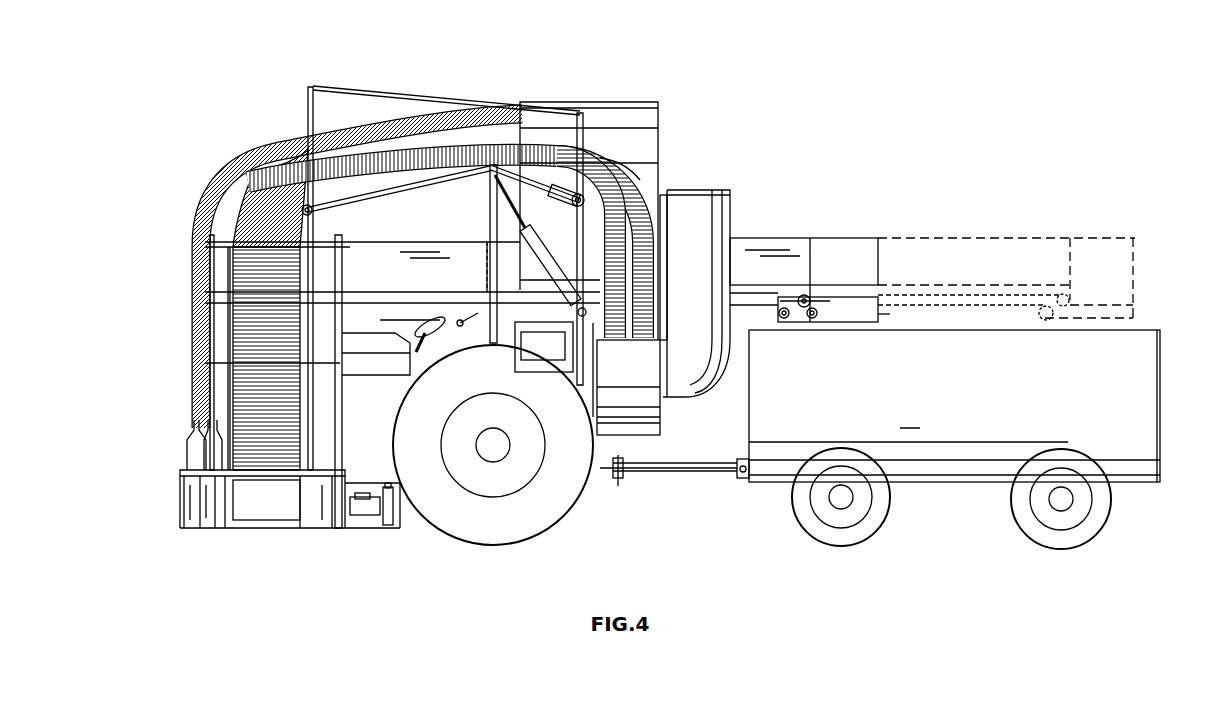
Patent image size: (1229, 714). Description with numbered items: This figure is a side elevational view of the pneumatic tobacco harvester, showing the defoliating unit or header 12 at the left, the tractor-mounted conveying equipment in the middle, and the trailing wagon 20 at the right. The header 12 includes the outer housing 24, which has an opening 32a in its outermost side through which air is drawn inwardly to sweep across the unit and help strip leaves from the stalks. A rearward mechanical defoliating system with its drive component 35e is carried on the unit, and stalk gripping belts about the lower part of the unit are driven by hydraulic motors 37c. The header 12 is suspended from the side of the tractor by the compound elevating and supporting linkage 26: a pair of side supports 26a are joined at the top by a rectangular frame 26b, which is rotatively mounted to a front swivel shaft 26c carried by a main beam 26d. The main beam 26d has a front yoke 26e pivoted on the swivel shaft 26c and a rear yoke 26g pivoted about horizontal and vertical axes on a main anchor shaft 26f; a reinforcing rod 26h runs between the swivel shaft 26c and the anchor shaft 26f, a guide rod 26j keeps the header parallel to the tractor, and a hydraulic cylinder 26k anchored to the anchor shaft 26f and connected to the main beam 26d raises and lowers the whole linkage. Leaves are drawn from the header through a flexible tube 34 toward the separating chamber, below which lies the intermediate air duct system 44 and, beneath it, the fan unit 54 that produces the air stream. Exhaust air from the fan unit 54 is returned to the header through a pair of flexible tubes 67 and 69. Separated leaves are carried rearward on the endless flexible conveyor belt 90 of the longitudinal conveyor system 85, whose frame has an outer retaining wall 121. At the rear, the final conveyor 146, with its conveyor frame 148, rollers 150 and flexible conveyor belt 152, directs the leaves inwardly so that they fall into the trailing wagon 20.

The defoliating unit or header 12 is at (172, 499).
The trailing wagon 20 is at (1150, 405).
The outer housing 24 is at (216, 517).
The compound elevating and supporting linkage 26 is at (304, 111).
The side supports 26a is at (337, 418).
The rectangular frame 26b is at (222, 248).
The front swivel shaft 26c is at (306, 112).
The main beam 26d is at (357, 186).
The front yoke 26e is at (232, 160).
The main anchor shaft 26f is at (583, 142).
The rear yoke 26g is at (578, 206).
The reinforcing rod 26h is at (393, 98).
The guide rod 26j is at (656, 172).
The hydraulic cylinder 26k is at (545, 263).
The opening 32a is at (280, 506).
The flexible tube 34 is at (237, 393).
The motor 35e is at (367, 522).
The hydraulic motors 37c is at (398, 528).
The intermediate air duct system 44 is at (689, 403).
The fan unit 54 is at (658, 439).
The flexible tube 67 is at (603, 248).
The flexible tube 69 is at (657, 245).
The longitudinal conveyor system 85 is at (749, 224).
The endless flexible conveyor belt 90 is at (372, 298).
The retaining wall 121 is at (800, 248).
The final conveyor 146 is at (886, 316).
The conveyor frame 148 is at (820, 300).
The rollers 150 is at (783, 322).
The flexible conveyor belt 152 is at (853, 323).